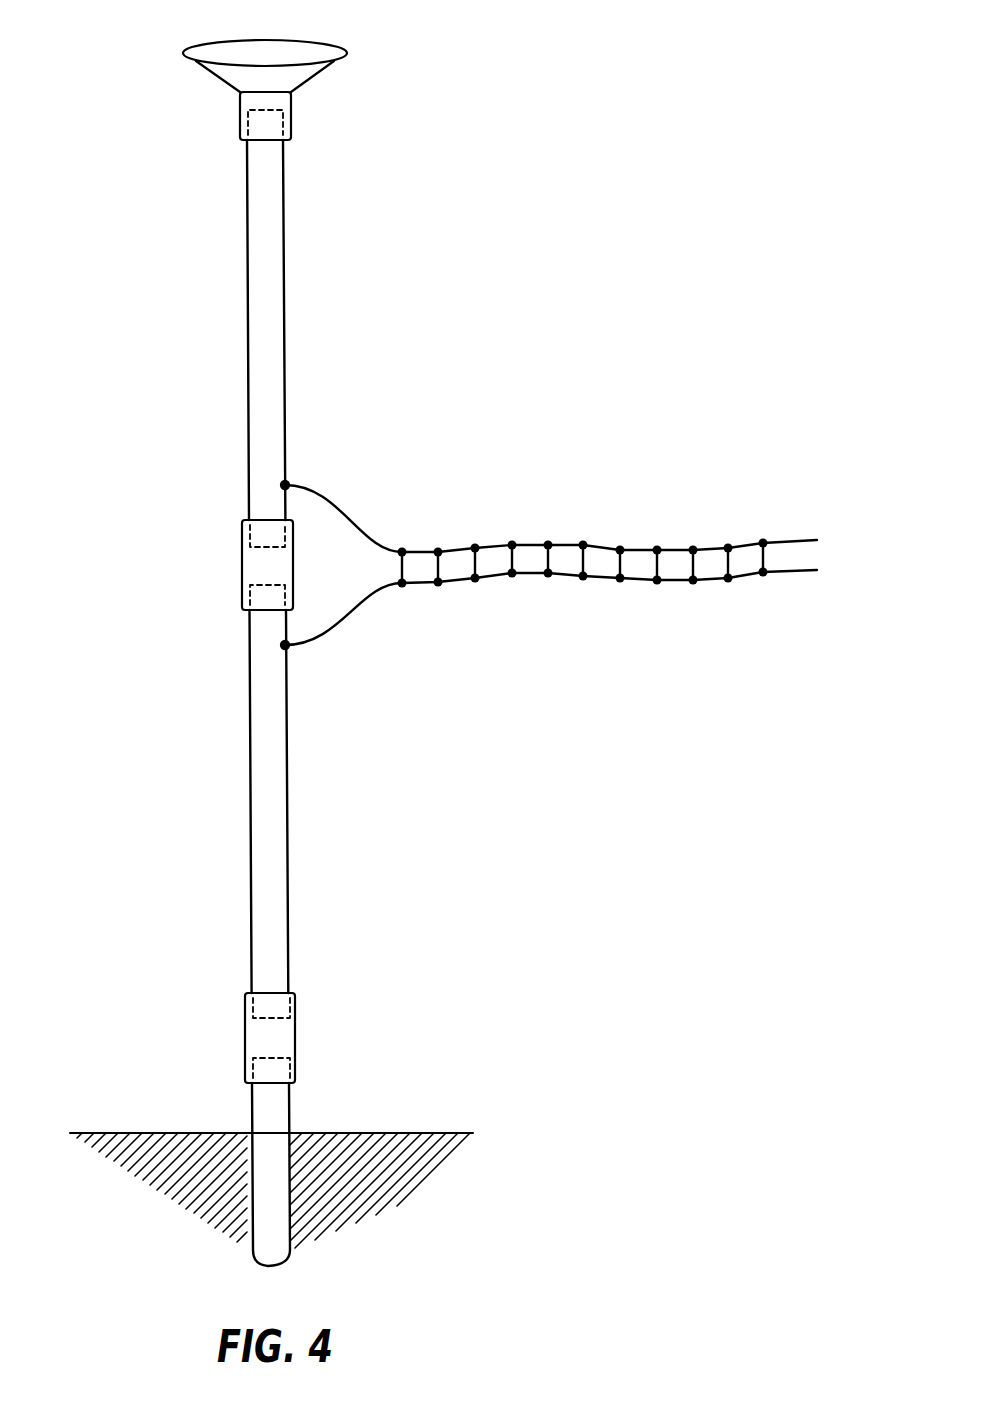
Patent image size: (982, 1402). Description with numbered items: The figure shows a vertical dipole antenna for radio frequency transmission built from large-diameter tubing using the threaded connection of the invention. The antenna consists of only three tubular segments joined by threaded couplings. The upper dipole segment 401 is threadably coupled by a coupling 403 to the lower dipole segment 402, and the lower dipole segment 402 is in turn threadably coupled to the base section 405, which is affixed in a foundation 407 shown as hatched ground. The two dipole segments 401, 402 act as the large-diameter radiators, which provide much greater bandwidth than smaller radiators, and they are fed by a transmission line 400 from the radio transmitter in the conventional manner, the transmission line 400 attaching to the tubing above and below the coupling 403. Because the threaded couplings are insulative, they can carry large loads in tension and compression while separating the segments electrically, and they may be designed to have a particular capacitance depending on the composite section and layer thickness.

The transmission line 400 is at (548, 545).
The upper dipole segment 401 is at (284, 287).
The lower dipole segment 402 is at (288, 800).
The coupling 403 is at (242, 565).
The base section 405 is at (297, 1110).
The foundation 407 is at (350, 1198).